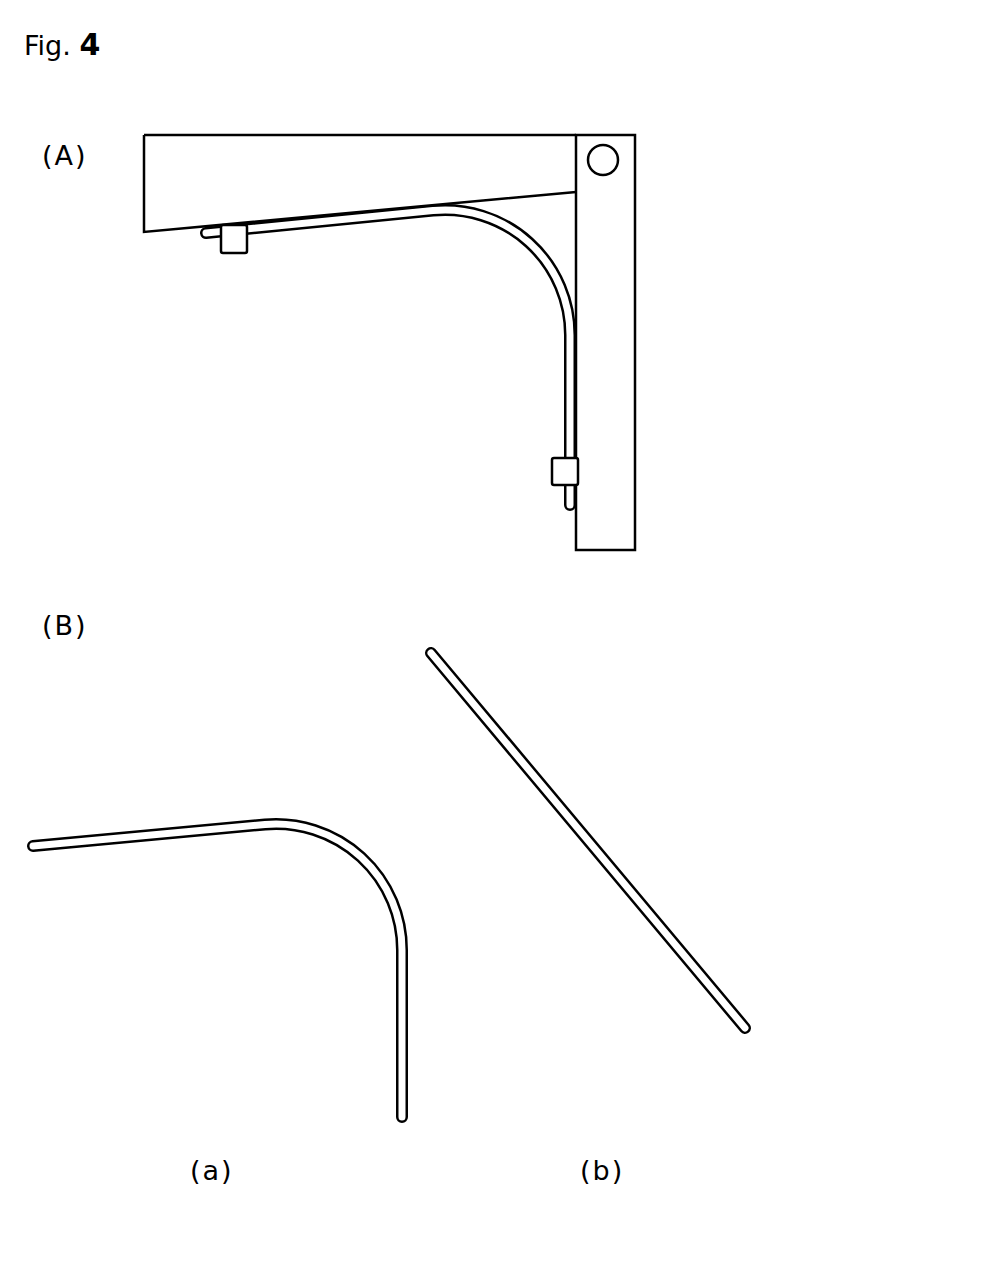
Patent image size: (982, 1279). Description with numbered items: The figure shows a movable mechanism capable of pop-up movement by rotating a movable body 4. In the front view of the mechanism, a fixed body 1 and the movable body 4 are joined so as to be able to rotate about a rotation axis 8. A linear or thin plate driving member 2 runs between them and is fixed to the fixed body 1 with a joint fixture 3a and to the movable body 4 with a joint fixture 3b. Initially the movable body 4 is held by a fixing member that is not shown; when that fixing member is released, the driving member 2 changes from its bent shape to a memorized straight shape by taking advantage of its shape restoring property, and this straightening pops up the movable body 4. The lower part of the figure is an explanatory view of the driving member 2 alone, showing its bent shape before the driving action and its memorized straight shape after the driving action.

The fixed body 1 is at (618, 413).
The driving member 2 is at (508, 238).
The joint fixture 3a is at (553, 472).
The joint fixture 3b is at (233, 253).
The movable body 4 is at (348, 180).
The rotation axis 8 is at (611, 162).